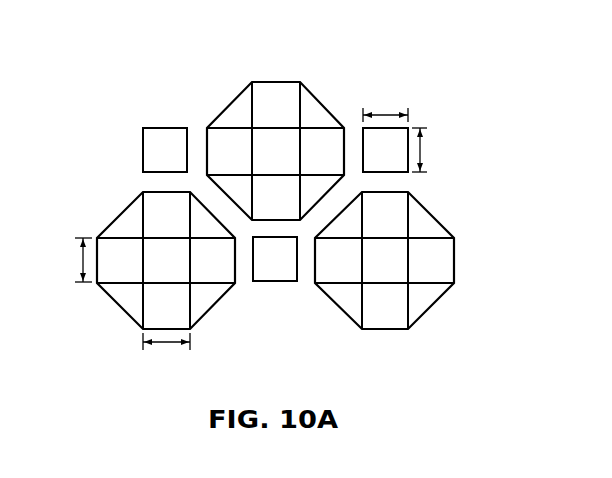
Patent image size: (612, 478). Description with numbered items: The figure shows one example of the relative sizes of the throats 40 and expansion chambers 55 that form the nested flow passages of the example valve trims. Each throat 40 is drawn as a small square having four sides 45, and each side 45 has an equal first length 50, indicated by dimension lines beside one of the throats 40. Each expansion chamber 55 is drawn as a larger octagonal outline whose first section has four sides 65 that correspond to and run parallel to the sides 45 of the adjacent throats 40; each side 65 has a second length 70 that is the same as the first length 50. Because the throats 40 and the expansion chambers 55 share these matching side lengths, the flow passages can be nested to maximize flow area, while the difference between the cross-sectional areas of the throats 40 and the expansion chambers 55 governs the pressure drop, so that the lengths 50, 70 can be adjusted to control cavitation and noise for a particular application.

The throat 40 is at (275, 150).
The side 45 is at (187, 150).
The first length 50 is at (383, 115).
The expansion chamber 55 is at (275, 72).
The side 65 is at (315, 257).
The second length 70 is at (82, 258).